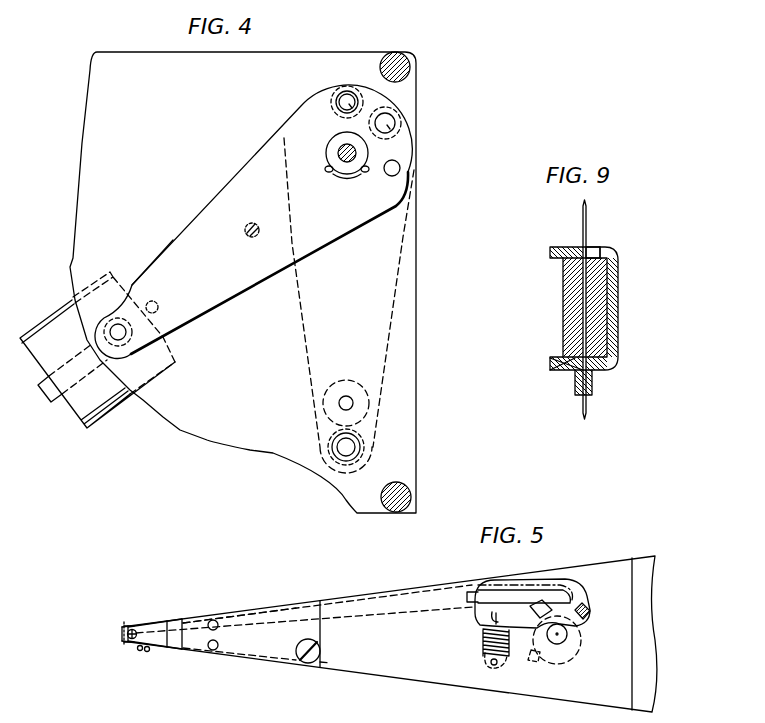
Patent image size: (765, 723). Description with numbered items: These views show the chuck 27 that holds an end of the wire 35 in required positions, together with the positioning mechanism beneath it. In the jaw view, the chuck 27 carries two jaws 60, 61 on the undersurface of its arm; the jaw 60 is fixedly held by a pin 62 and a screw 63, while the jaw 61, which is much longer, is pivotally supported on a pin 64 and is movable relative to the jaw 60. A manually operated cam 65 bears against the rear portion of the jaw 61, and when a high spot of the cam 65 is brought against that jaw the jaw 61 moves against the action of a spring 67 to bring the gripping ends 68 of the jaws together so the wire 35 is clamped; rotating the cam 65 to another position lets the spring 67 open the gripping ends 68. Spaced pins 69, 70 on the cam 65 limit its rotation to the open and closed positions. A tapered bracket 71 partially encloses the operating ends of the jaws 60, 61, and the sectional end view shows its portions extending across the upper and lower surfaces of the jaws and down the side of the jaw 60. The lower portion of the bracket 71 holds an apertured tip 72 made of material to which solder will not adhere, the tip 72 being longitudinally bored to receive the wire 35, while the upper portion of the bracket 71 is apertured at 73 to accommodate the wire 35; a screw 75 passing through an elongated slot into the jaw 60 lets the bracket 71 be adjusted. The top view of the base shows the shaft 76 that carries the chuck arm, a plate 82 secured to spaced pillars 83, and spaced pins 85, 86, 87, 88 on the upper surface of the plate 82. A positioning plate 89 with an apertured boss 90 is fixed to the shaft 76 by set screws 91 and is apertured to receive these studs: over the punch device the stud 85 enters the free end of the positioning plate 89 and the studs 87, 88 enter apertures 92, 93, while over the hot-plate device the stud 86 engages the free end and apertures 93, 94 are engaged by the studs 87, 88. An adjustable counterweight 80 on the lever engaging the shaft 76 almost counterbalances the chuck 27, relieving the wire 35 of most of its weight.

In FIG. 5, the chuck 27 is at (375, 681).
In FIG. 9, the wire 35 is at (587, 226).
In FIG. 5, the wire 35 is at (128, 642).
In FIG. 9, the jaw 60 is at (598, 314).
In FIG. 5, the jaw 60 is at (257, 648).
In FIG. 9, the jaw 61 is at (568, 327).
In FIG. 5, the jaw 61 is at (418, 603).
In FIG. 5, the pin 62 is at (213, 651).
In FIG. 5, the screw 63 is at (312, 664).
In FIG. 5, the pin 64 is at (216, 620).
In FIG. 5, the cam 65 is at (583, 641).
In FIG. 5, the spring 67 is at (482, 640).
In FIG. 5, the gripping ends 68 is at (121, 636).
In FIG. 5, the pin 69 is at (590, 609).
In FIG. 5, the pin 70 is at (540, 660).
In FIG. 9, the tapered bracket 71 is at (620, 281).
In FIG. 5, the tapered bracket 71 is at (158, 621).
In FIG. 9, the apertured tip 72 is at (595, 388).
In FIG. 9, the aperture 73 is at (598, 247).
In FIG. 5, the aperture 73 is at (133, 628).
In FIG. 5, the screw 75 is at (150, 651).
In FIG. 4, the shaft 76 is at (340, 151).
In FIG. 4, the adjustable counterweight 80 is at (46, 326).
In FIG. 4, the plate 82 is at (417, 323).
In FIG. 4, the pillars 83 is at (410, 60).
In FIG. 4, the pin 85 is at (127, 288).
In FIG. 4, the pin 86 is at (361, 447).
In FIG. 4, the pin 87 is at (345, 93).
In FIG. 4, the pin 88 is at (393, 118).
In FIG. 4, the positioning plate 89 is at (183, 230).
In FIG. 4, the apertured boss 90 is at (327, 169).
In FIG. 4, the set screws 91 is at (346, 178).
In FIG. 4, the aperture 92 is at (361, 88).
In FIG. 4, the aperture 93 is at (404, 123).
In FIG. 4, the aperture 94 is at (400, 165).